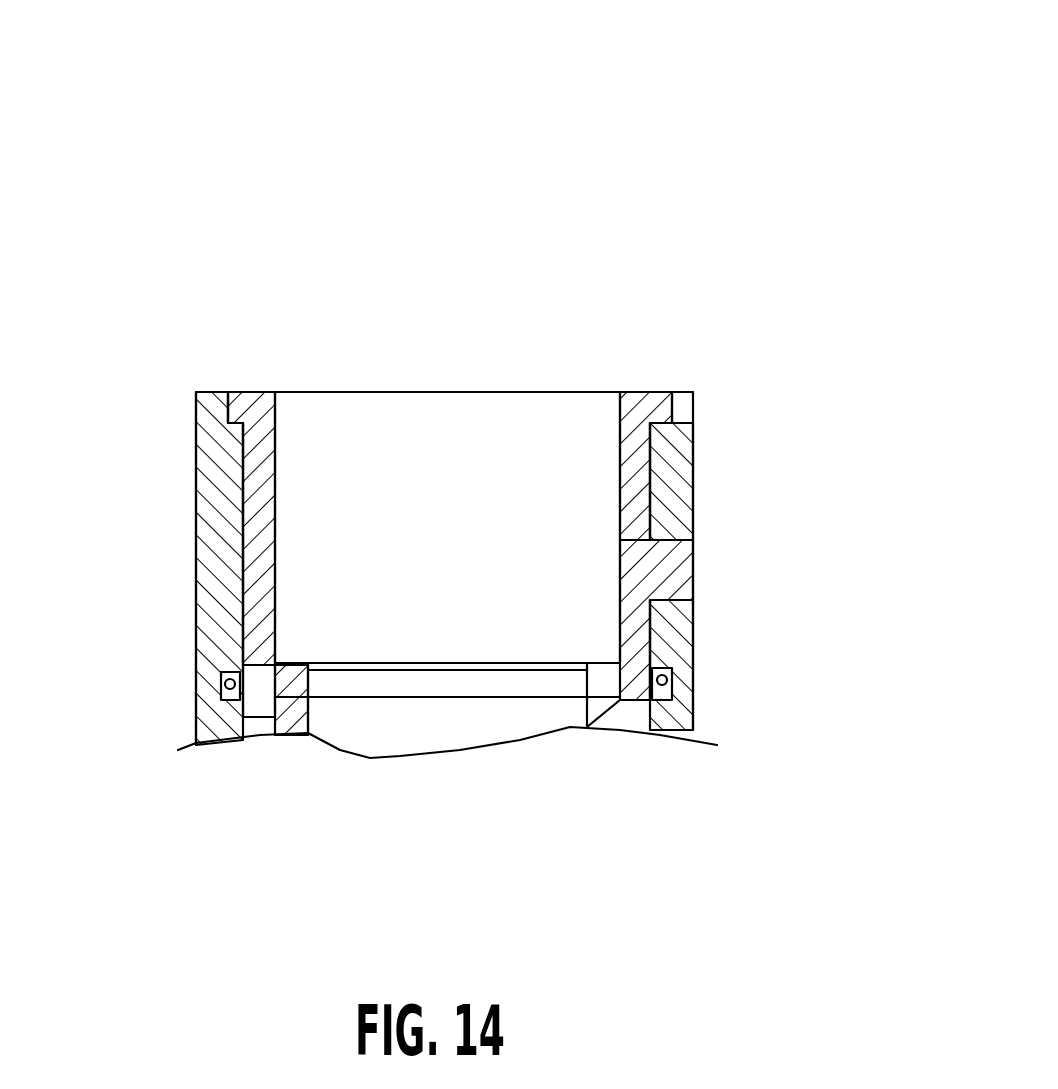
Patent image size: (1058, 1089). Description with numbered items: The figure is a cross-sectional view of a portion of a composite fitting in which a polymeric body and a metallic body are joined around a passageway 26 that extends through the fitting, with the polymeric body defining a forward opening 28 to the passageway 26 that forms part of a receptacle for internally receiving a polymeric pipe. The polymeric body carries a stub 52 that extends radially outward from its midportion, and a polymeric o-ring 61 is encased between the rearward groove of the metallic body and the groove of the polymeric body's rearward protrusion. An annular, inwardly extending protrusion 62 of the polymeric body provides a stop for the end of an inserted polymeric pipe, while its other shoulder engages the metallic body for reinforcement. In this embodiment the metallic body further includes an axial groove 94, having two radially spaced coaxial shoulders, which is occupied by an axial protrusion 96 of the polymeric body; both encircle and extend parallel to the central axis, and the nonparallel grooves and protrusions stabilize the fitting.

The passageway 26 is at (468, 440).
The forward opening 28 is at (540, 440).
The stub 52 is at (695, 568).
The o-ring 61 is at (233, 680).
The inwardly extending protrusion 62 is at (383, 698).
The axial groove 94 is at (693, 710).
The axial protrusion 96 is at (598, 718).